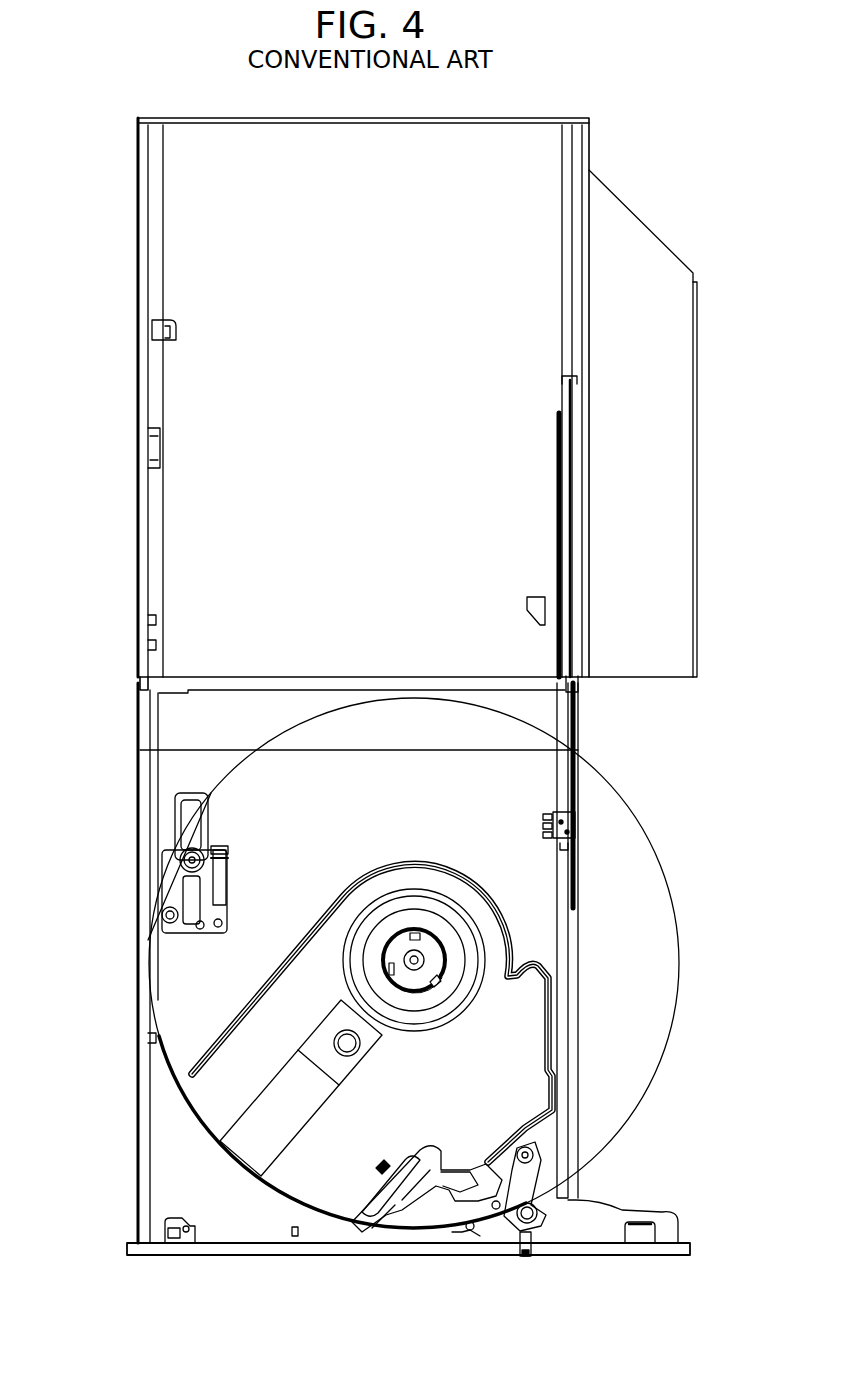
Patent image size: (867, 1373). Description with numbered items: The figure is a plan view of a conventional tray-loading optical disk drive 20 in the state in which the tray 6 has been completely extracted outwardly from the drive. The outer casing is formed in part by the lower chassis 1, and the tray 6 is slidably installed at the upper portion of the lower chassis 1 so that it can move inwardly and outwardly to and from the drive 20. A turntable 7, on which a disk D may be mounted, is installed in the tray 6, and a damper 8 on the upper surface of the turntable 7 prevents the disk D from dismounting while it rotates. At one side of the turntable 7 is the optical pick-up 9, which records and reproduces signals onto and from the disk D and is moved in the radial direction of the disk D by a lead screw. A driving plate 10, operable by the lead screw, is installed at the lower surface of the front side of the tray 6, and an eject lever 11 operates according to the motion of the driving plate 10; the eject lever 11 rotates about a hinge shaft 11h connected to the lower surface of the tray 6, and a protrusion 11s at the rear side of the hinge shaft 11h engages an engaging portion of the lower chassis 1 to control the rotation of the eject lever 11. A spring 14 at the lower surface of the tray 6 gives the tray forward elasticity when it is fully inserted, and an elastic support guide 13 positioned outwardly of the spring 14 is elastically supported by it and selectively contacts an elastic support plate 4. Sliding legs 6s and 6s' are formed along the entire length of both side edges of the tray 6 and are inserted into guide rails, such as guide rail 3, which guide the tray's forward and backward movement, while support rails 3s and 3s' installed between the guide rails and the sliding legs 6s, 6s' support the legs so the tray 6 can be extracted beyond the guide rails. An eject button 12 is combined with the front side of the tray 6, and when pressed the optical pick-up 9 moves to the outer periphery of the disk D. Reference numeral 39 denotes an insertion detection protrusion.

The lower chassis 1 is at (696, 515).
The guide rail 3 is at (148, 192).
The support rail 3s is at (321, 690).
The support rail 3s' is at (596, 539).
The elastic support plate 4 is at (175, 322).
The tray 6 is at (228, 1257).
The sliding leg 6s is at (143, 963).
The sliding leg 6s' is at (605, 940).
The turntable 7 is at (414, 915).
The damper 8 is at (444, 980).
The optical pick-up 9 is at (315, 1035).
The driving plate 10 is at (441, 1162).
The eject lever 11 is at (478, 1236).
The protrusion 11s is at (534, 1156).
The hinge shaft 11h is at (536, 1222).
The eject button 12 is at (525, 1256).
The elastic support guide 13 is at (180, 925).
The spring 14 is at (222, 870).
The optical disk drive 20 is at (645, 192).
The insertion detection protrusion 39 is at (560, 808).
The disk D is at (662, 840).